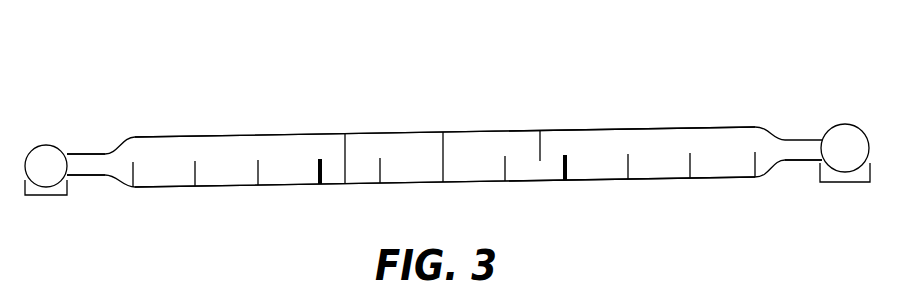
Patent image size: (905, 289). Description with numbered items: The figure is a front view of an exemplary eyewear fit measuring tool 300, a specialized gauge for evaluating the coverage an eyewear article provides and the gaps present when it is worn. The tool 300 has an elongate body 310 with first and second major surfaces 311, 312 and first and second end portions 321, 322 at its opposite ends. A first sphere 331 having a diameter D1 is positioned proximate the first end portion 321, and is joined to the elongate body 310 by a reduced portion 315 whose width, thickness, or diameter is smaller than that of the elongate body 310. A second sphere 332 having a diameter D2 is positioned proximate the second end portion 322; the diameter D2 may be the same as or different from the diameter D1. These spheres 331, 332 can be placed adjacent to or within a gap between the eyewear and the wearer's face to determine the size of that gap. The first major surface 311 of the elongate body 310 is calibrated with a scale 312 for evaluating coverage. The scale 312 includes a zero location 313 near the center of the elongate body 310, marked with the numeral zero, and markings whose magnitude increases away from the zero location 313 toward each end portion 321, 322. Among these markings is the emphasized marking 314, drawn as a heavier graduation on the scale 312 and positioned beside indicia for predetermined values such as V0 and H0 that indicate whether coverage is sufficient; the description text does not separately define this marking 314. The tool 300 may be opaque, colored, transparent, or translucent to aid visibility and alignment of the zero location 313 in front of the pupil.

The eyewear fit measuring tool 300 is at (447, 147).
The elongate body 310 is at (232, 135).
The first major surface 311 is at (164, 149).
The scale 312 is at (118, 188).
The zero location 313 is at (445, 166).
The thick graduation mark 314 is at (355, 186).
The reduced portion 315 is at (89, 153).
The first end portion 321 is at (93, 188).
The second end portion 322 is at (793, 170).
The first sphere 331 is at (43, 143).
The second sphere 332 is at (843, 124).
The diameter of first sphere D1 is at (40, 198).
The diameter of second sphere D2 is at (842, 185).